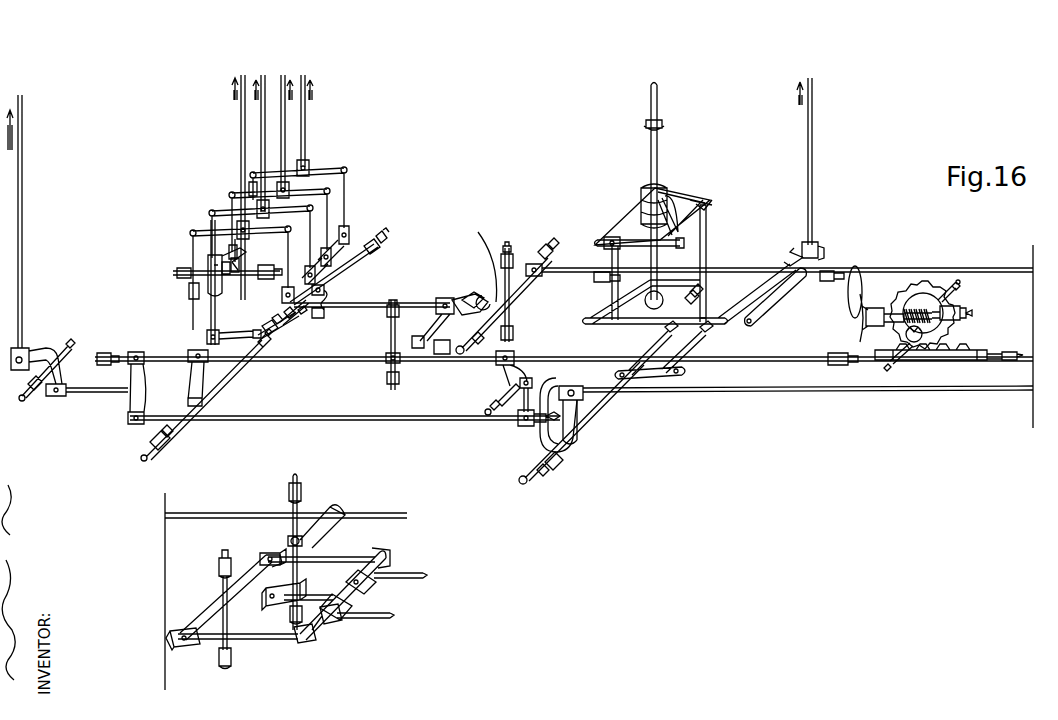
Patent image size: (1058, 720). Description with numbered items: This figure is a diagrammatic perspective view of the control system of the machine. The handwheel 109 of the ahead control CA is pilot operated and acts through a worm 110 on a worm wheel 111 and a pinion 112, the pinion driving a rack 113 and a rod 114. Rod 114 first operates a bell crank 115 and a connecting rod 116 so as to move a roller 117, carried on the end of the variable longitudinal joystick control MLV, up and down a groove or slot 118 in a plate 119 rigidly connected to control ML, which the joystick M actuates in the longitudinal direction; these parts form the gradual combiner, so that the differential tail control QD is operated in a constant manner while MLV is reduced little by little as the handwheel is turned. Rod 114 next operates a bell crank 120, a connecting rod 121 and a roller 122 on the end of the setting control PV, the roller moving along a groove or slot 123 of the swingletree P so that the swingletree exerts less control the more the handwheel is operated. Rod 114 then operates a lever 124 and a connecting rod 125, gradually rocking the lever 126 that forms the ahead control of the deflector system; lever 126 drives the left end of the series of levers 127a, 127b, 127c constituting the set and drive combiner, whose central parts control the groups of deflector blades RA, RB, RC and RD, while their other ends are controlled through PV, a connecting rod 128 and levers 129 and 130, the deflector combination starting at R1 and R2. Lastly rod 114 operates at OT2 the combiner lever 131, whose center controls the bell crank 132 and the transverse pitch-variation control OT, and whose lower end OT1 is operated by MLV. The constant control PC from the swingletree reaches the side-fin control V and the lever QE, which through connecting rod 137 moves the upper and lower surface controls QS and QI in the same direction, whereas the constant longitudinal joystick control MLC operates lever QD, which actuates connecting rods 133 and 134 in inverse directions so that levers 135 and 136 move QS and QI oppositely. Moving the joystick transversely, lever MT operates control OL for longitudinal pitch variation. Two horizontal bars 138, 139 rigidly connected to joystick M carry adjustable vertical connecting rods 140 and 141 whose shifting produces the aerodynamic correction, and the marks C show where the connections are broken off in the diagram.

The handwheel 109 is at (860, 284).
The worm 110 is at (940, 292).
The worm wheel 111 is at (930, 366).
The pinion 112 is at (922, 300).
The rack 113 is at (968, 360).
The rod 114 is at (772, 360).
The bell crank 115 is at (500, 376).
The connecting rod 116 is at (522, 402).
The roller 117 is at (576, 406).
The groove or slot 118 is at (540, 438).
The plate 119 is at (572, 442).
The bell crank 120 is at (392, 352).
The connecting rod 121 is at (432, 342).
The roller 122 is at (488, 272).
The groove or slot 123 is at (500, 217).
The lever 124 is at (193, 386).
The connecting rod 125 is at (223, 330).
The lever 126 is at (205, 315).
The lever 127a is at (192, 232).
The lever 127b is at (230, 192).
The lever 127c is at (310, 172).
The connecting rod 128 is at (370, 262).
The lever 129 is at (327, 298).
The lever 130 is at (340, 250).
The combiner lever 131 is at (126, 419).
The bell crank 132 is at (40, 345).
The connecting rod 133 is at (258, 650).
The connecting rod 134 is at (352, 558).
The lever 135 is at (380, 566).
The lever 136 is at (322, 622).
The connecting rod 137 is at (312, 605).
The horizontal bar 138 is at (630, 234).
The horizontal bar 139 is at (690, 212).
The vertical connecting rod 140 is at (605, 262).
The vertical connecting rod 141 is at (708, 246).
The transverse pitch variation control OT is at (30, 221).
The transverse pitch variation control starting point OT1 is at (185, 402).
The transverse pitch variation control starting point OT2 is at (134, 350).
The deflector blade group control point RA is at (233, 176).
The deflector blade group control point RB is at (261, 121).
The deflector blade group control point RC is at (280, 121).
The deflector blade group control point RD is at (310, 99).
The deflector system control combination starting point R1 is at (330, 170).
The deflector system control combination starting point R2 is at (193, 242).
The swingletree P is at (506, 240).
The variable control of the steering swingletree PV is at (462, 300).
The constant control of the steering swingletree PC is at (562, 274).
The joystick M is at (655, 155).
The constant control by joystick, transverse direction MT is at (782, 297).
The longitudinal joystick control ML is at (660, 380).
The constant control by joystick, longitudinal direction MLC is at (836, 392).
The variable control by joystick, longitudinal direction MLV is at (312, 393).
The longitudinal pitch variation control OL is at (813, 169).
The ahead control CA is at (962, 300).
The section line C is at (156, 586).
The vertical side fin control point V is at (370, 508).
The differential tail control starting point QD is at (208, 614).
The general tail control starting point QE is at (303, 552).
The upper tail surface control point QS is at (393, 586).
The lower tail surface control point QI is at (348, 628).